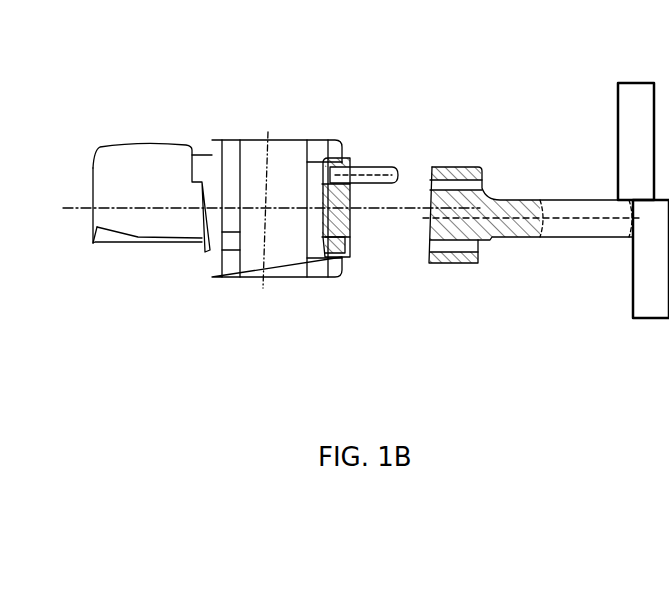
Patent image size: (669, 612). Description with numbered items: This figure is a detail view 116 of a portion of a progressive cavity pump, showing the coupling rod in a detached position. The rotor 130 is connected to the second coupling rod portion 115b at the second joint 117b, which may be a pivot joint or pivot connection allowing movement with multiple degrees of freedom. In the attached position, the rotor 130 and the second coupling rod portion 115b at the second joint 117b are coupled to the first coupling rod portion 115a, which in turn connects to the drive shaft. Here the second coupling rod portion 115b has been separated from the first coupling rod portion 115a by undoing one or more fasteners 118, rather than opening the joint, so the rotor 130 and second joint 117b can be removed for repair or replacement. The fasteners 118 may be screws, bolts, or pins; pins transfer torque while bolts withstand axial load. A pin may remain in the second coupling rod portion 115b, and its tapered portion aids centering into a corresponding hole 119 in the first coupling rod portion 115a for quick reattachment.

The rotor 130 is at (141, 101).
The second joint 117b is at (273, 87).
The first coupling rod portion 115a is at (354, 121).
The fasteners 118 is at (365, 166).
The detail view 116 is at (475, 39).
The hole 119 is at (452, 166).
The second coupling rod portion 115b is at (558, 150).